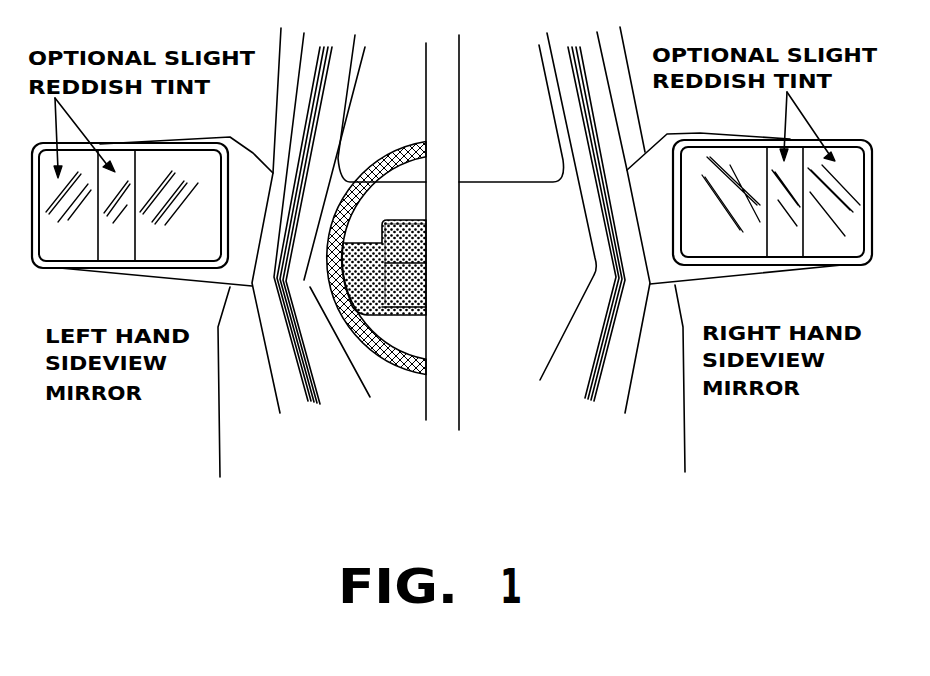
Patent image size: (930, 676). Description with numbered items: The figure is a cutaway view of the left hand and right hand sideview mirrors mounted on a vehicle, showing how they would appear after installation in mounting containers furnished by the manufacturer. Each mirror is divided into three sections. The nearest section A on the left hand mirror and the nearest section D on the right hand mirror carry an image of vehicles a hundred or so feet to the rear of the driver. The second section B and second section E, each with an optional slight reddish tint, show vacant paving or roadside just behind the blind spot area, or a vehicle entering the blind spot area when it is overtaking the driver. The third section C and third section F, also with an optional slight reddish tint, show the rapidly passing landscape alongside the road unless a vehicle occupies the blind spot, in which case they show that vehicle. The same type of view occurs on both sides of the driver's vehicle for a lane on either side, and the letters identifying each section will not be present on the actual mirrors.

The nearest section A is at (169, 213).
The second section B is at (119, 205).
The third section C is at (72, 205).
The nearest section D is at (734, 202).
The second section E is at (787, 202).
The third section F is at (834, 209).